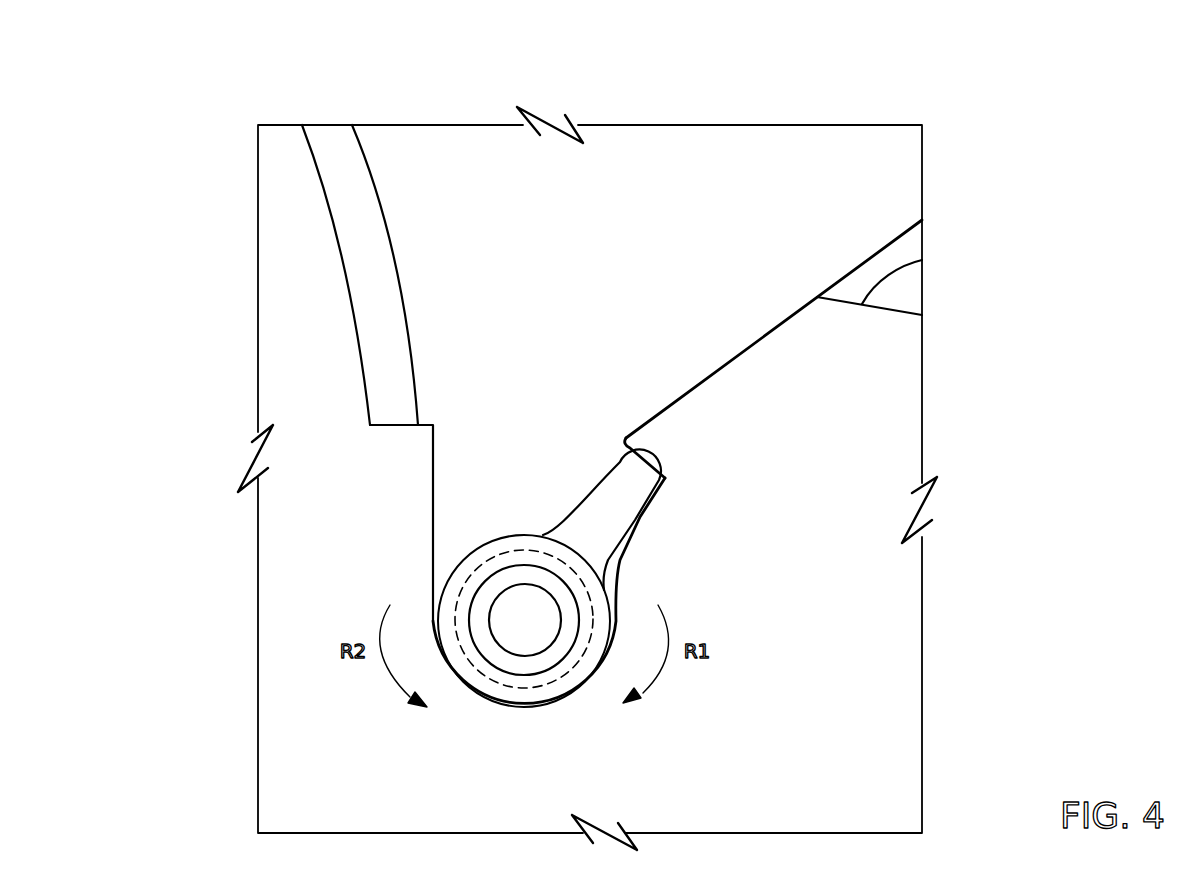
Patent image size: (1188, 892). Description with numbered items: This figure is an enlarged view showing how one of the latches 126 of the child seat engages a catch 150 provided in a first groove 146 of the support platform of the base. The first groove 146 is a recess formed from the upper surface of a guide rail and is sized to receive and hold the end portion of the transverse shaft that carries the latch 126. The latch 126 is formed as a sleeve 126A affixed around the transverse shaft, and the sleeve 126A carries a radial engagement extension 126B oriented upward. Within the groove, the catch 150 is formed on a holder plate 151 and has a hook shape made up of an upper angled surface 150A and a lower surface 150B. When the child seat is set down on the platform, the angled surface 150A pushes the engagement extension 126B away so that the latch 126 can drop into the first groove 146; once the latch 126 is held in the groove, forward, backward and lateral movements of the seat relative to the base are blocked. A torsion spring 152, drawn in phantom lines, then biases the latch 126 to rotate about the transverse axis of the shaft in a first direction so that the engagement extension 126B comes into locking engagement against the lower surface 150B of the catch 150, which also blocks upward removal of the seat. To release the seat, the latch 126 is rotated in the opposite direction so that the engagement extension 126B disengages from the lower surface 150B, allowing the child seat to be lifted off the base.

The first groove 146 is at (486, 290).
The catch 150 is at (775, 66).
The upper angled surface 150A is at (758, 341).
The lower surface 150B is at (633, 455).
The latch 126 is at (1011, 375).
The sleeve 126A is at (590, 597).
The radial engagement extension 126B is at (642, 478).
The torsion spring 152 is at (463, 587).
The holder plate 151 is at (795, 773).